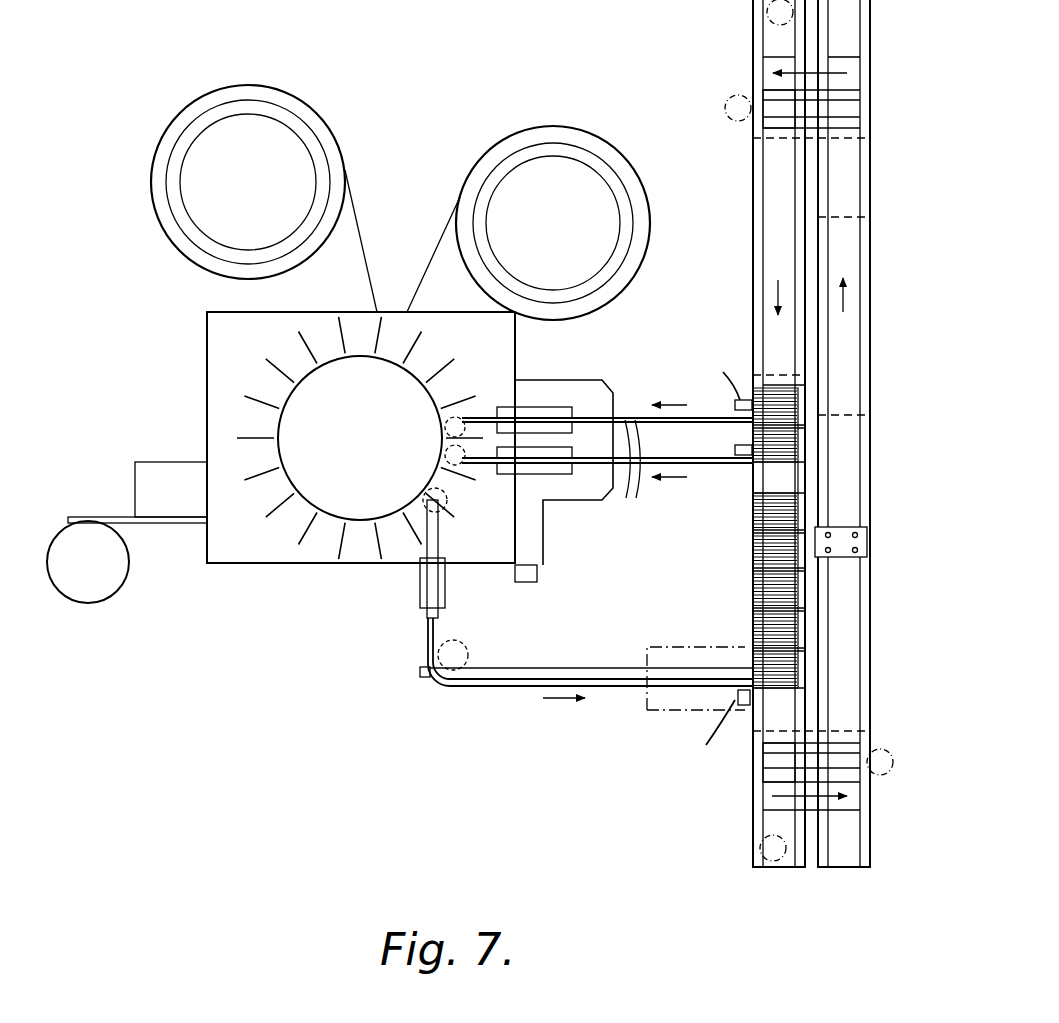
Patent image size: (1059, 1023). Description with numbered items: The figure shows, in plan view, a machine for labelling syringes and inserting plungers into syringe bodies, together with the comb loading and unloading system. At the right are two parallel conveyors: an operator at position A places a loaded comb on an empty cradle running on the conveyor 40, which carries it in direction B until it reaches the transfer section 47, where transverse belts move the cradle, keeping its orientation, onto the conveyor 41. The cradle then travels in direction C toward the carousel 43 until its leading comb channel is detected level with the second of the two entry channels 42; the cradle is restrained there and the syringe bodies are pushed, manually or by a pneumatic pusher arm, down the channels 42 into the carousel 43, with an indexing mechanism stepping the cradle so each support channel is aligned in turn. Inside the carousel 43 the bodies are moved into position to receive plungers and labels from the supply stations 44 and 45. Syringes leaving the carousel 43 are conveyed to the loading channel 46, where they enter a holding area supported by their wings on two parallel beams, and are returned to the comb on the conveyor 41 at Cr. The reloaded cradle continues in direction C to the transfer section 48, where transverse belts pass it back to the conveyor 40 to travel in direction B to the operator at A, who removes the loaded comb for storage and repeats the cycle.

The conveyor 40 is at (845, 180).
The conveyor 41 is at (778, 180).
The entry channels 42 is at (607, 471).
The carousel 43 is at (225, 352).
The supply station 44 is at (527, 186).
The supply station 45 is at (212, 155).
The loading channel 46 is at (633, 688).
The transfer section 47 is at (780, 108).
The transfer section 48 is at (770, 760).